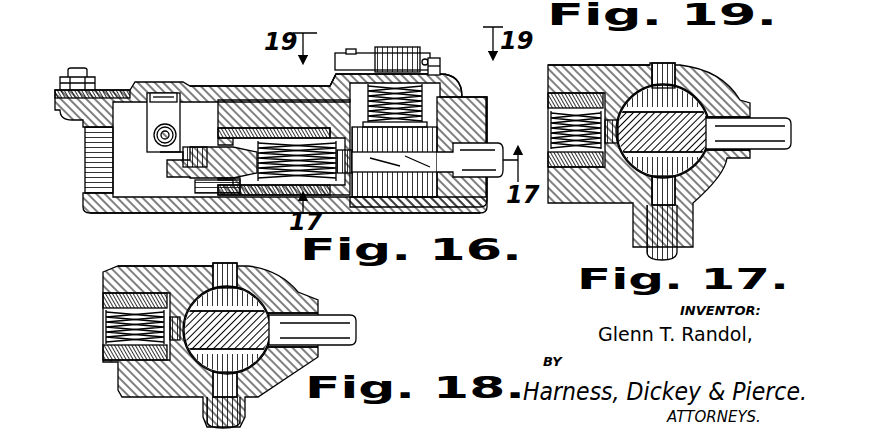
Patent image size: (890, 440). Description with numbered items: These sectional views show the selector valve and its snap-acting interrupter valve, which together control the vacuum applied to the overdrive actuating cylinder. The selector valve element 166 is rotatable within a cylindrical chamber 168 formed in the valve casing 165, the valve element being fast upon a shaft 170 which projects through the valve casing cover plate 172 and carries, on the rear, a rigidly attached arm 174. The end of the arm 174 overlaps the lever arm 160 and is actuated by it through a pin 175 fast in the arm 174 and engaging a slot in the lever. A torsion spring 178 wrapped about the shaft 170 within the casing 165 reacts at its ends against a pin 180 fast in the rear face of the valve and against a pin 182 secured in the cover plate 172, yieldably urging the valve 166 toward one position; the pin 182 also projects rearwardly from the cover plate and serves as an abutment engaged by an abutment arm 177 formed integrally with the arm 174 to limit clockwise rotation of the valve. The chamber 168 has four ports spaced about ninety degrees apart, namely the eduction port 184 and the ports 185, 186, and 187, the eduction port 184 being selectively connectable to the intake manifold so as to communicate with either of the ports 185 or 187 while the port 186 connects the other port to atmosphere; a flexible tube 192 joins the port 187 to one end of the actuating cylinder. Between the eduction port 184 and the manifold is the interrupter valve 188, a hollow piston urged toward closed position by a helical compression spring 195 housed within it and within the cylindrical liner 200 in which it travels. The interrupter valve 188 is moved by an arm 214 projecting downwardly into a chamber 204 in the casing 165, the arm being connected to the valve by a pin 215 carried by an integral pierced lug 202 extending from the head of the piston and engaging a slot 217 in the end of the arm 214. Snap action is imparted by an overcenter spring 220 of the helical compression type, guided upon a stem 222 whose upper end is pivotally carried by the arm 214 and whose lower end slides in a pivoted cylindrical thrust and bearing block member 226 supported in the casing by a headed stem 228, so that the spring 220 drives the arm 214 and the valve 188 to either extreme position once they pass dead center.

In FIG. 16, the lever arm 160 is at (334, 76).
In FIG. 16, the valve casing 165 is at (243, 206).
In FIG. 17, the valve casing 165 is at (606, 75).
In FIG. 18, the valve casing 165 is at (125, 273).
In FIG. 16, the selector valve element 166 is at (415, 173).
In FIG. 17, the selector valve element 166 is at (726, 101).
In FIG. 18, the selector valve element 166 is at (286, 305).
In FIG. 16, the cylindrical chamber 168 is at (468, 111).
In FIG. 17, the cylindrical chamber 168 is at (692, 103).
In FIG. 18, the cylindrical chamber 168 is at (246, 286).
In FIG. 16, the shaft 170 is at (408, 42).
In FIG. 16, the valve casing cover plate 172 is at (245, 86).
In FIG. 16, the arm 174 is at (366, 55).
In FIG. 16, the pin 175 is at (347, 50).
In FIG. 16, the abutment arm 177 is at (427, 60).
In FIG. 16, the torsion spring 178 is at (458, 92).
In FIG. 16, the pin 180 is at (368, 100).
In FIG. 16, the pin 182 is at (441, 65).
In FIG. 16, the eduction port 184 is at (370, 198).
In FIG. 17, the eduction port 184 is at (665, 132).
In FIG. 18, the eduction port 184 is at (227, 330).
In FIG. 17, the port 185 is at (660, 70).
In FIG. 18, the port 185 is at (215, 266).
In FIG. 16, the port 186 is at (470, 178).
In FIG. 17, the port 186 is at (722, 160).
In FIG. 18, the port 186 is at (322, 347).
In FIG. 17, the port 187 is at (677, 193).
In FIG. 18, the port 187 is at (240, 401).
In FIG. 16, the interrupter valve 188 is at (292, 126).
In FIG. 17, the interrupter valve 188 is at (565, 99).
In FIG. 18, the interrupter valve 188 is at (103, 300).
In FIG. 17, the flexible tube 192 is at (678, 256).
In FIG. 18, the flexible tube 192 is at (206, 423).
In FIG. 16, the helical compression spring 195 is at (296, 186).
In FIG. 17, the helical compression spring 195 is at (560, 131).
In FIG. 18, the helical compression spring 195 is at (105, 330).
In FIG. 16, the cylindrical liner 200 is at (200, 211).
In FIG. 17, the cylindrical liner 200 is at (603, 200).
In FIG. 18, the cylindrical liner 200 is at (103, 355).
In FIG. 16, the pierced lug 202 is at (170, 168).
In FIG. 16, the chamber 204 is at (163, 200).
In FIG. 16, the arm 214 is at (210, 150).
In FIG. 16, the pin 215 is at (195, 183).
In FIG. 16, the slot 217 is at (162, 153).
In FIG. 16, the overcenter spring 220 is at (157, 130).
In FIG. 16, the stem 222 is at (157, 136).
In FIG. 16, the thrust and bearing block member 226 is at (180, 98).
In FIG. 16, the headed stem 228 is at (165, 92).